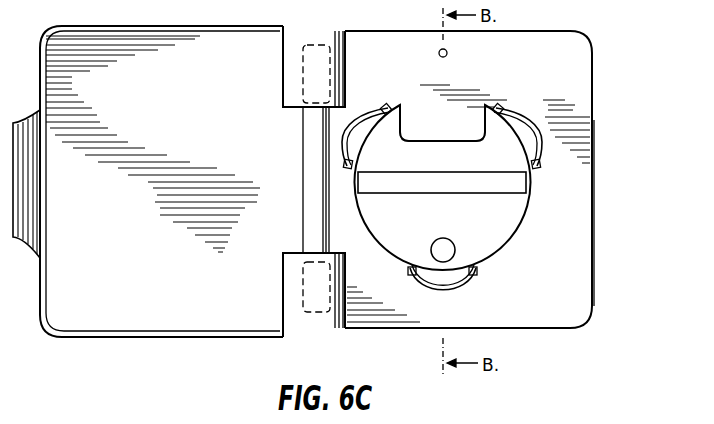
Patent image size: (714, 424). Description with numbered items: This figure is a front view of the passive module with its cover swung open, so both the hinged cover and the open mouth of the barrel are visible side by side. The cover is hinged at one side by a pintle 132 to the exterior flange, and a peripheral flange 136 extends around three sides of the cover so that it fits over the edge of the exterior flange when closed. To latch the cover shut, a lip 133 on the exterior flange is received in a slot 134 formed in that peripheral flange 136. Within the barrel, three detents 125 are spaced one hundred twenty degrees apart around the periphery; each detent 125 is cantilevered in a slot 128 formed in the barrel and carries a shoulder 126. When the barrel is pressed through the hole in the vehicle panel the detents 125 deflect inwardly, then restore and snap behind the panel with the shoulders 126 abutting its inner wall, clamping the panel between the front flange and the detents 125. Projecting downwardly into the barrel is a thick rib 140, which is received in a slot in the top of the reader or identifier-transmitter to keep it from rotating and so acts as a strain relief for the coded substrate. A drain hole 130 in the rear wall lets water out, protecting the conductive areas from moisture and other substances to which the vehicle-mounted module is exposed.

The detent 125 is at (356, 116).
The shoulder 126 is at (356, 146).
The slot 128 is at (386, 105).
The drain hole 130 is at (440, 238).
The pintle 132 is at (318, 47).
The lip 133 is at (594, 186).
The slot 134 is at (46, 197).
The peripheral flange 136 is at (112, 337).
The thick rib 140 is at (441, 124).